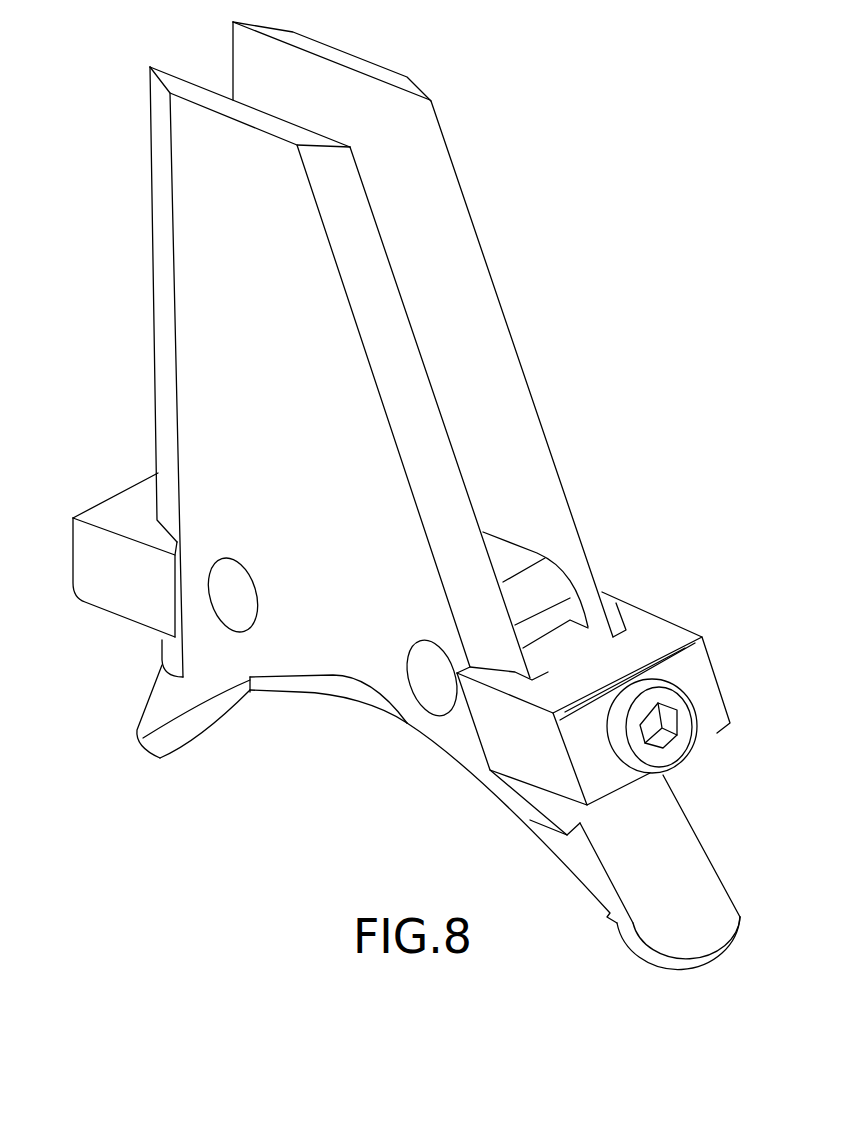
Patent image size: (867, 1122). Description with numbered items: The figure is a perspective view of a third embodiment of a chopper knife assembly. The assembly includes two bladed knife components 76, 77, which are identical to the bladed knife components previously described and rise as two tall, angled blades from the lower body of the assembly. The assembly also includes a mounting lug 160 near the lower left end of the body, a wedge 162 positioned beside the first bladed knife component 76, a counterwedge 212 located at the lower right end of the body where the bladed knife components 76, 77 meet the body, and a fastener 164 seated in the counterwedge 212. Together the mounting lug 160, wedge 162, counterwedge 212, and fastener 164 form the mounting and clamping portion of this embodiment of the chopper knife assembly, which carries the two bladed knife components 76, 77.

The bladed knife component 76 is at (198, 250).
The bladed knife component 77 is at (452, 150).
The wedge 162 is at (88, 608).
The mounting lug 160 is at (177, 753).
The counterwedge 212 is at (698, 637).
The fastener 164 is at (667, 753).